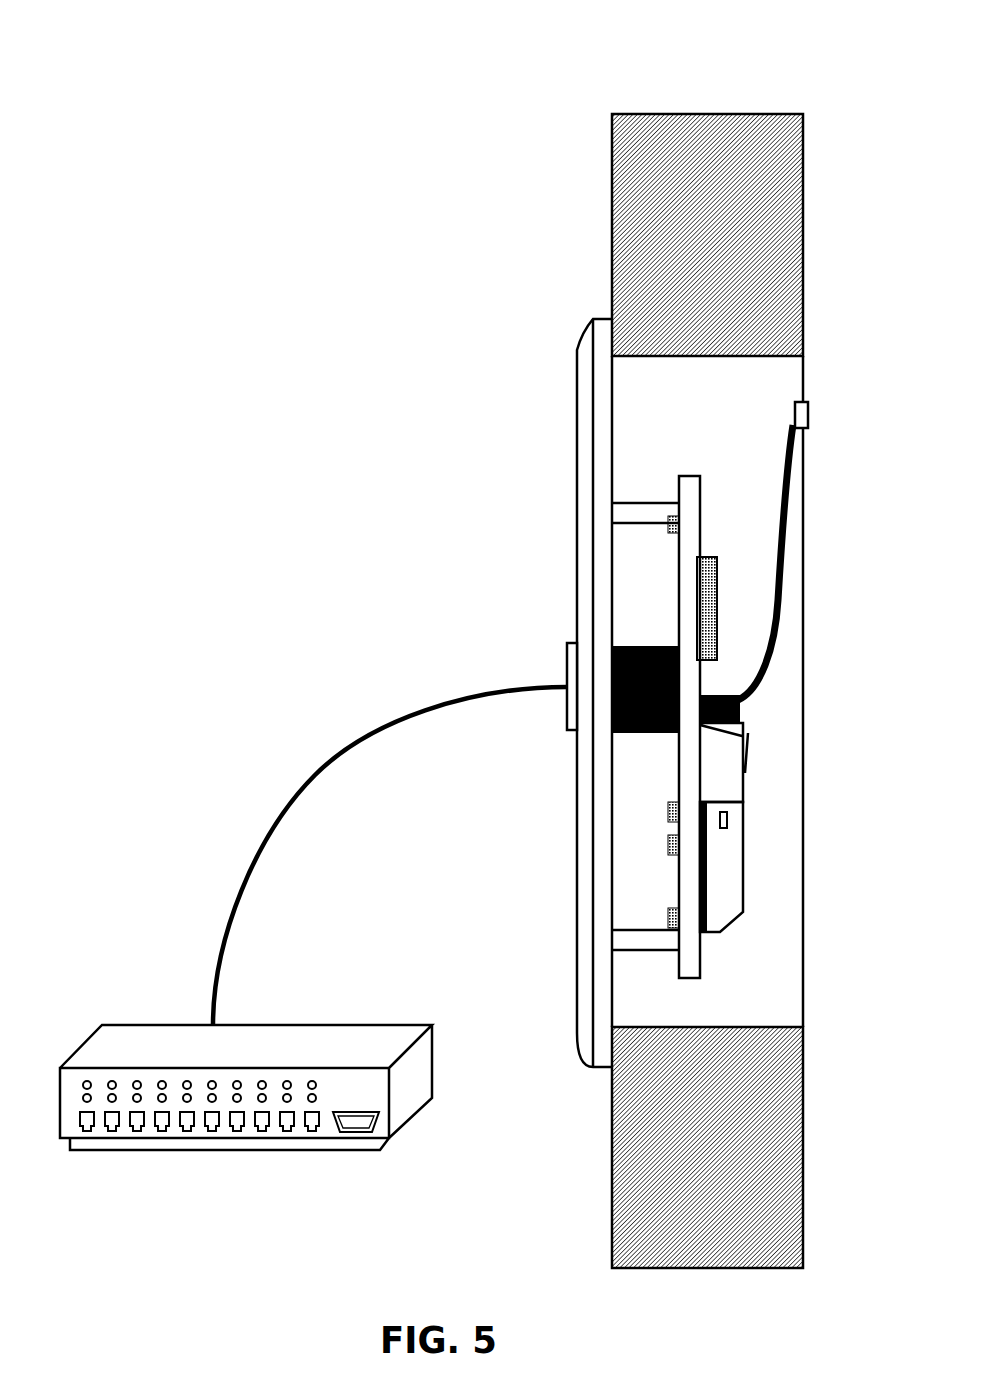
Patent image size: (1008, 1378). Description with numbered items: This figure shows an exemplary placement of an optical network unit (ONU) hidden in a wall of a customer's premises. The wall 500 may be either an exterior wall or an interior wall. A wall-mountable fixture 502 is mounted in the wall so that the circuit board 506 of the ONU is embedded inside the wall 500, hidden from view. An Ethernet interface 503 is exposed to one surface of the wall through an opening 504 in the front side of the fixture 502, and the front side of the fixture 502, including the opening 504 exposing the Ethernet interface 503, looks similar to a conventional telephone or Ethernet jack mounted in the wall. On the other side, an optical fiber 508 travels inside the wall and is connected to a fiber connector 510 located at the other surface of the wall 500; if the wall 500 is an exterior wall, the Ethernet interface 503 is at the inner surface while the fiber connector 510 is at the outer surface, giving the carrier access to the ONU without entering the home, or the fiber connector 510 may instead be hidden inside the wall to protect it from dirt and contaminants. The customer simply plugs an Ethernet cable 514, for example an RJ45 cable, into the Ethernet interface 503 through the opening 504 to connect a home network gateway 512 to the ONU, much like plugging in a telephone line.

The wall 500 is at (713, 113).
The wall-mountable fixture 502 is at (594, 320).
The Ethernet interface 503 is at (648, 733).
The opening 504 is at (557, 687).
The circuit board 506 is at (700, 476).
The optical fiber 508 is at (787, 580).
The fiber connector 510 is at (808, 415).
The home network gateway 512 is at (428, 1099).
The Ethernet cable 514 is at (307, 790).